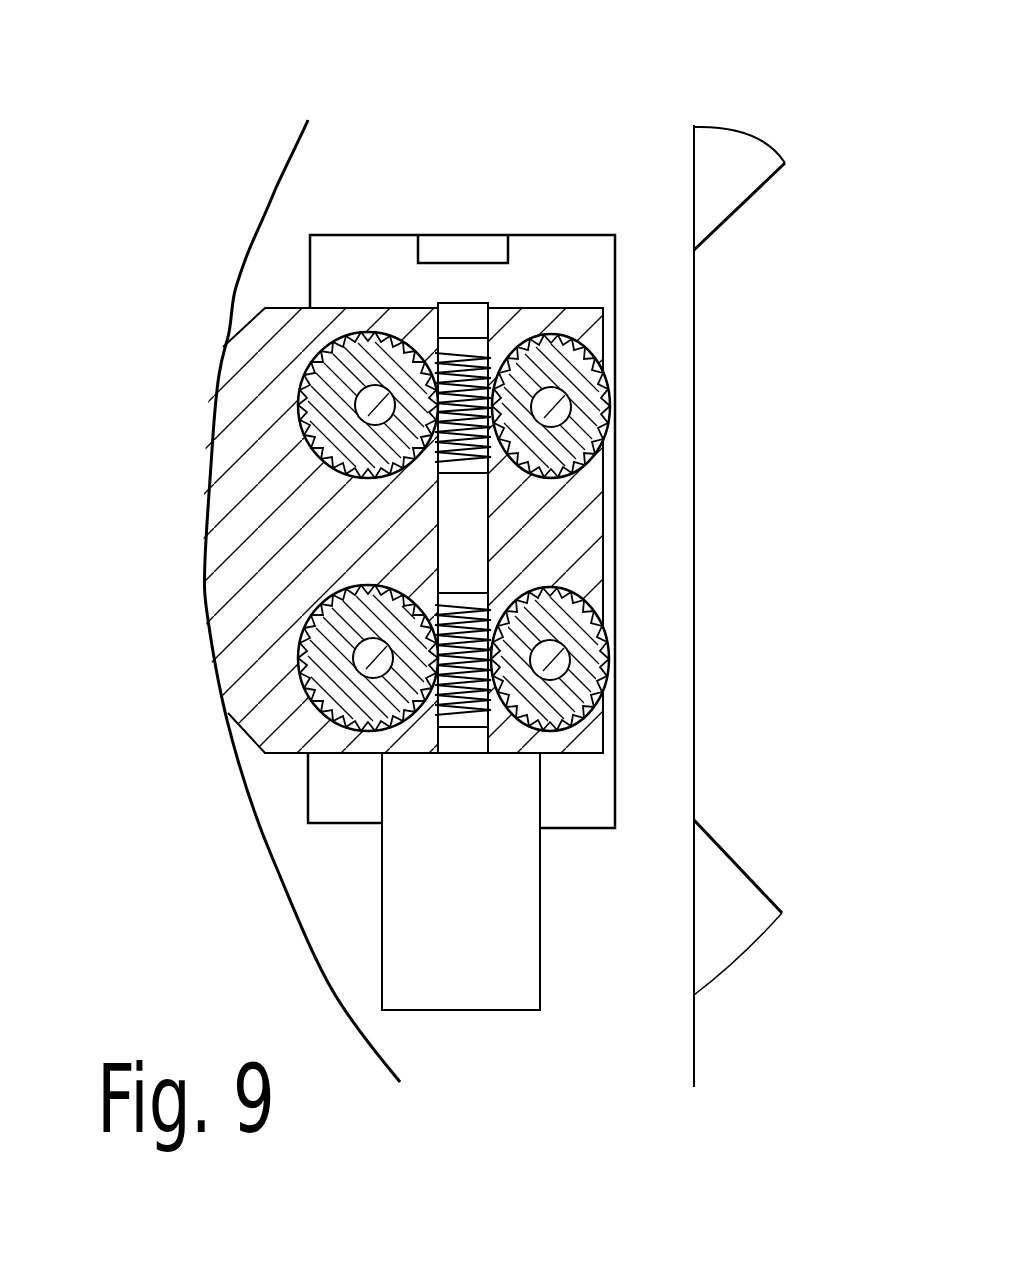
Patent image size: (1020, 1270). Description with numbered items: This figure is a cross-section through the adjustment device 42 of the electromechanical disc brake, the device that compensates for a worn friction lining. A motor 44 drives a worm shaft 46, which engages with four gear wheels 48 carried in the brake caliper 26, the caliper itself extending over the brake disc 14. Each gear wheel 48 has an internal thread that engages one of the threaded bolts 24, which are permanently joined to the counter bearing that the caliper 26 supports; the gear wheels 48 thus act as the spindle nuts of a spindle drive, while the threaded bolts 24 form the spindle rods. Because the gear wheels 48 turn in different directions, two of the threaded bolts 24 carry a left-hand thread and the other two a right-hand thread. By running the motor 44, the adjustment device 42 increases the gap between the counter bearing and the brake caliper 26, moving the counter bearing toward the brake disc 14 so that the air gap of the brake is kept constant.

The brake disc 14 is at (737, 160).
The threaded bolts 24 is at (365, 403).
The brake caliper 26 is at (567, 524).
The adjustment device 42 is at (556, 195).
The motor 44 is at (495, 905).
The worm shaft 46 is at (453, 530).
The gear wheels 48 is at (360, 372).